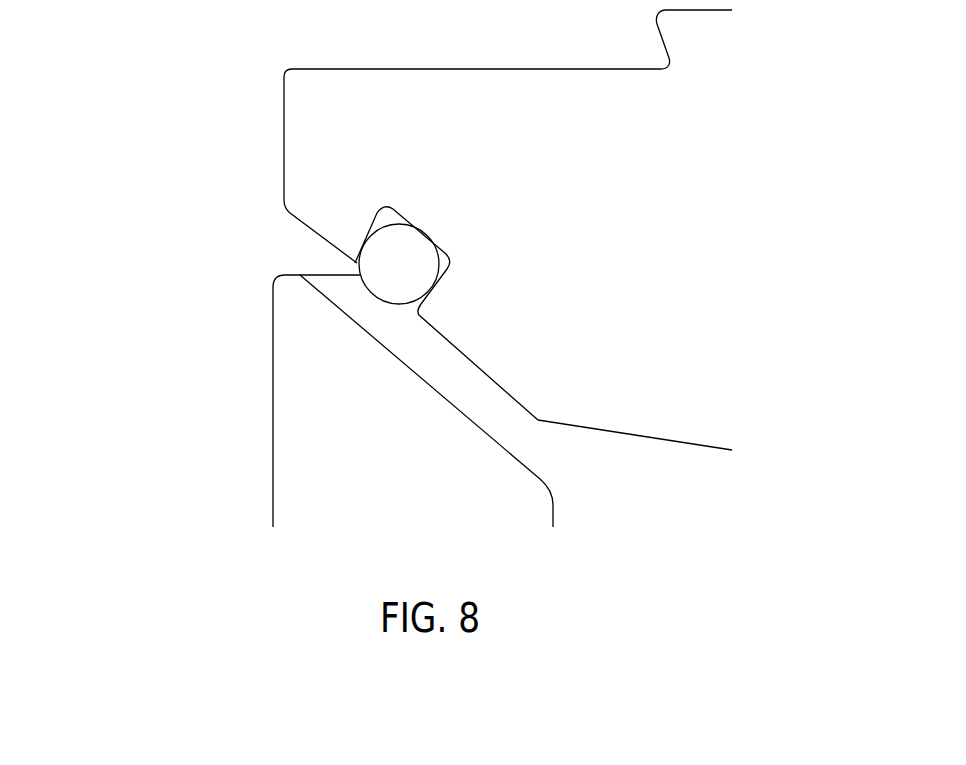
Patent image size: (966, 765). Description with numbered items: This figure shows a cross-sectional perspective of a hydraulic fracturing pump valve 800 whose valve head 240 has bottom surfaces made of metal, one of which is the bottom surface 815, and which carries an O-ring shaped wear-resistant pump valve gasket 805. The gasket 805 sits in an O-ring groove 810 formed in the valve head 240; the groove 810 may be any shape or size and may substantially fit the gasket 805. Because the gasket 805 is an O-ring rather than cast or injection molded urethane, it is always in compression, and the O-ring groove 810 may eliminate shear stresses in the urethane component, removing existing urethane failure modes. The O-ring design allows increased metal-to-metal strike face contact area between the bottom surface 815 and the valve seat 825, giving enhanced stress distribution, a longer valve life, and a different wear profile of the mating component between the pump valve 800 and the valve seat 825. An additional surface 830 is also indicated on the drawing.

The hydraulic fracturing pump valve 800 is at (588, 217).
The valve head 240 is at (400, 162).
The bottom surface 815 is at (283, 181).
The O-ring groove 810 is at (402, 212).
The O-ring shaped wear-resistant pump valve gasket 805 is at (398, 265).
The valve seat 825 is at (342, 430).
The sealing surface 830 is at (487, 432).